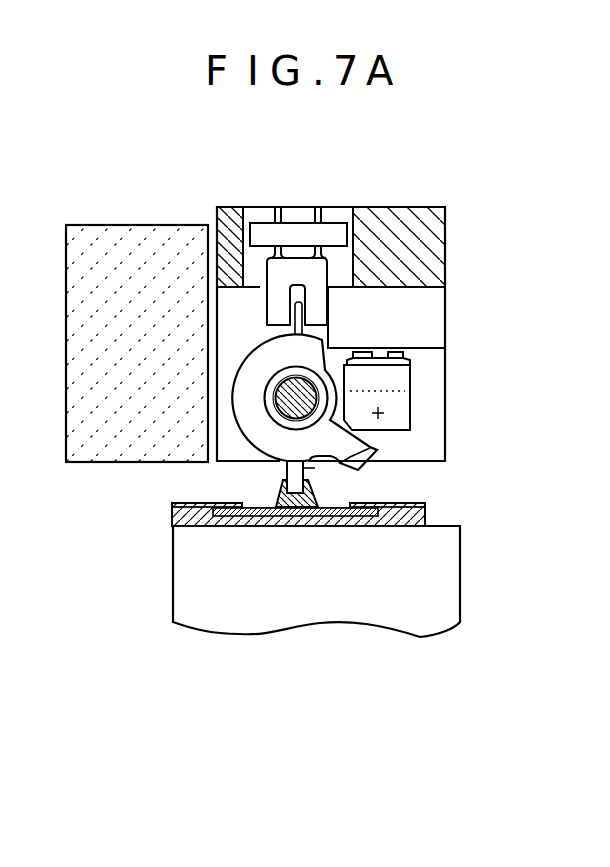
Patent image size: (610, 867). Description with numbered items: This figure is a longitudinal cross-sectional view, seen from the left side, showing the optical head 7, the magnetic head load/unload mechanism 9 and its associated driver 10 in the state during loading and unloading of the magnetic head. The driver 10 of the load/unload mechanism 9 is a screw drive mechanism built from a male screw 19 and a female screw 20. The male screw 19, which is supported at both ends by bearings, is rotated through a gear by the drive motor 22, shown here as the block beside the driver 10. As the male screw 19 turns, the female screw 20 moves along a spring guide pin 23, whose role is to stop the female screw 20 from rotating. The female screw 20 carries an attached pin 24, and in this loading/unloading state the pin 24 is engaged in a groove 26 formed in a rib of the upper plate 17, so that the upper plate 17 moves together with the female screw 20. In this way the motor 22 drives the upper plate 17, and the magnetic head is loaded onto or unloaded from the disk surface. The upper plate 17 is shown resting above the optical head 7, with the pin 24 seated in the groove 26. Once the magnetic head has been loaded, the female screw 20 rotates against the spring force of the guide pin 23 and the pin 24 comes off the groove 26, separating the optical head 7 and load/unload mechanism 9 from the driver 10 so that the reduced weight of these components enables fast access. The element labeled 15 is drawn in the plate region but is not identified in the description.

The optical head 7 is at (172, 597).
The magnetic head load/unload mechanism 9 is at (168, 515).
The driver 10 is at (452, 293).
The pedestal layer 15 is at (307, 517).
The upper plate 17 is at (283, 517).
The male screw 19 is at (317, 383).
The female screw 20 is at (308, 350).
The drive motor 22 is at (122, 232).
The spring guide pin 23 is at (377, 450).
The pin 24 is at (297, 483).
The groove 26 is at (317, 520).